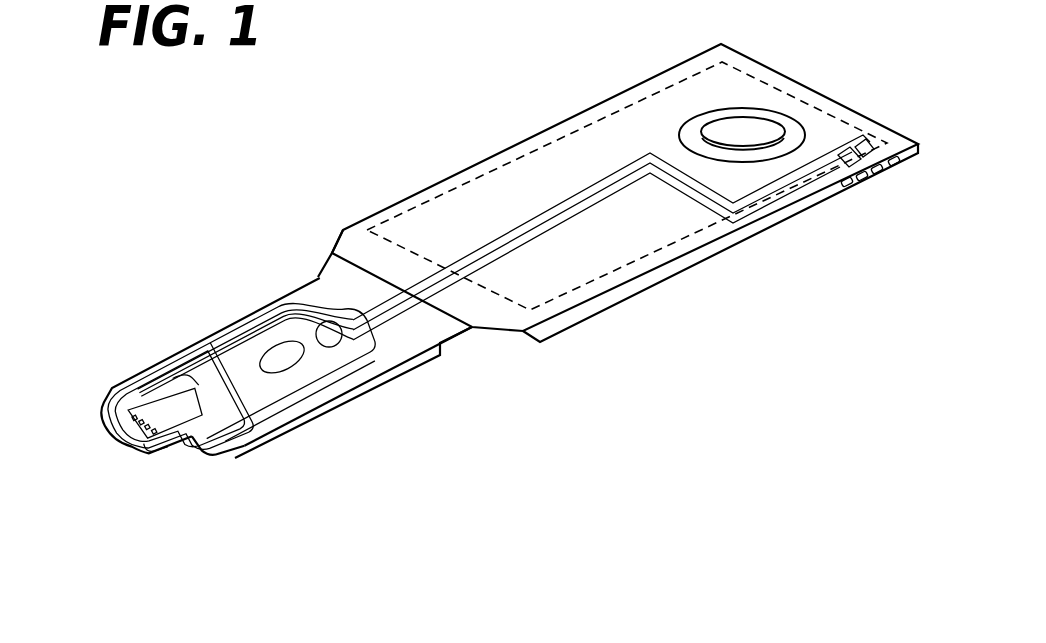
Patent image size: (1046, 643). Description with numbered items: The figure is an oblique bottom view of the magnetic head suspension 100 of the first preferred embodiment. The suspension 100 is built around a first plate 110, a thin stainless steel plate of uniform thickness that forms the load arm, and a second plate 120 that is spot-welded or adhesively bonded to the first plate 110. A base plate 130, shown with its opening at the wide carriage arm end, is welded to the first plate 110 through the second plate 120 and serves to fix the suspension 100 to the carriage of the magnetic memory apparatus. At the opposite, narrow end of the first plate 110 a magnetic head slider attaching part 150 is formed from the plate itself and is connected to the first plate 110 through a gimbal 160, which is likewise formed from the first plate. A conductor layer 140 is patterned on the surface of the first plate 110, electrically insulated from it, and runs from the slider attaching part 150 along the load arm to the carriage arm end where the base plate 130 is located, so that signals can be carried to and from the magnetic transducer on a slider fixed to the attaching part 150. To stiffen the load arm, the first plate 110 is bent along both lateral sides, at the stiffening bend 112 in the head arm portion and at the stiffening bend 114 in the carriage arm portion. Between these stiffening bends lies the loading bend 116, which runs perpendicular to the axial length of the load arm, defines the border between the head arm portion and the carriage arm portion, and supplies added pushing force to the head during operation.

The magnetic head suspension 100 is at (385, 146).
The first plate 110 is at (416, 337).
The stiffening bend in head arm portion 112 is at (229, 460).
The stiffening bend in carriage arm portion 114 is at (810, 203).
The loading bend 116 is at (475, 331).
The second plate 120 is at (688, 282).
The base plate 130 is at (722, 126).
The conductor layer 140 is at (316, 395).
The magnetic head slider attaching part 150 is at (167, 412).
The gimbal 160 is at (108, 468).